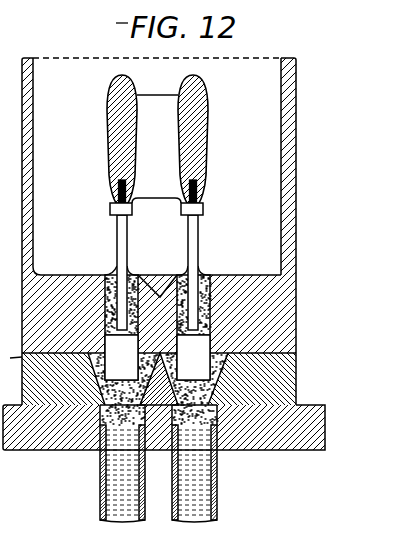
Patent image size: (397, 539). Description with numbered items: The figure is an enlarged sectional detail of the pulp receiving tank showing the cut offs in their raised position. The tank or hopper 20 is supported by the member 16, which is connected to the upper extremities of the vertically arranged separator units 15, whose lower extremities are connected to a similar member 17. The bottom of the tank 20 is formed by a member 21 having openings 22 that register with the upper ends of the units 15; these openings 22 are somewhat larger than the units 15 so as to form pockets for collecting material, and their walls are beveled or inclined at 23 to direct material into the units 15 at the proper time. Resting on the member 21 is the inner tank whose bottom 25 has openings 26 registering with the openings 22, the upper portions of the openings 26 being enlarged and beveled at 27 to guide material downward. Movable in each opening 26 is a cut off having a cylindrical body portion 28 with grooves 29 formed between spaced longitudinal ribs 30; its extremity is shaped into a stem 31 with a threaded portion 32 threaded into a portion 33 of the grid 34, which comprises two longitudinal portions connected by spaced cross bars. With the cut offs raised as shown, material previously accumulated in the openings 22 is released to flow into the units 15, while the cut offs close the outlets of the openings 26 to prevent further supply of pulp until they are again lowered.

The separator unit 15 is at (217, 484).
The member 16 is at (304, 436).
The member 17 is at (11, 359).
The tank or hopper 20 is at (297, 164).
The member 21 is at (297, 381).
The opening 22 is at (243, 336).
The beveled or inclined wall 23 is at (97, 393).
The bottom 25 is at (292, 239).
The opening 26 is at (30, 323).
The enlarged portion 27 is at (103, 297).
The cylindrical body portion 28 is at (50, 360).
The groove 29 is at (137, 272).
The longitudinal rib 30 is at (127, 262).
The stem 31 is at (116, 234).
The threaded portion 32 is at (114, 186).
The portion of grid 33 is at (106, 148).
The grid 34 is at (158, 100).